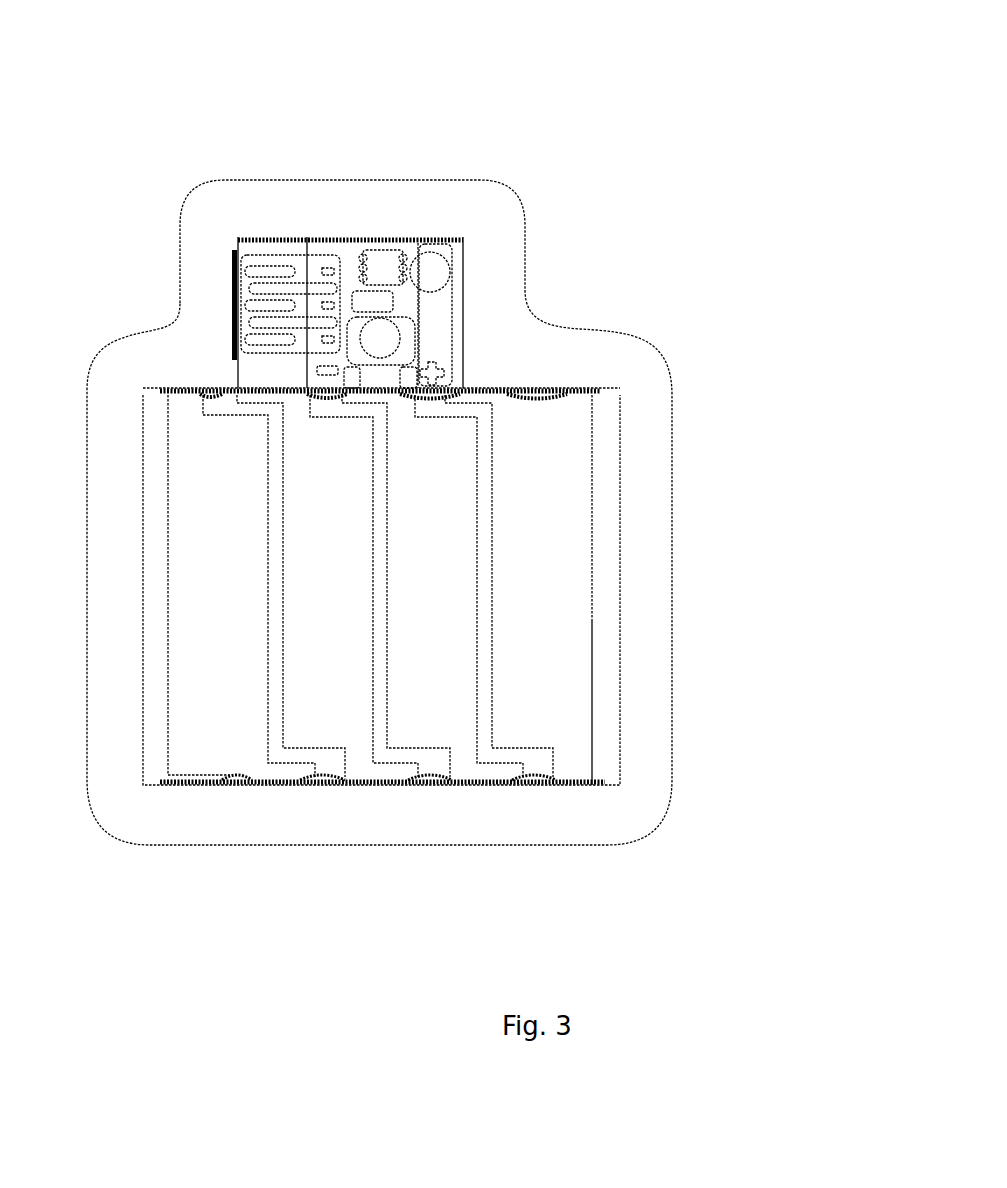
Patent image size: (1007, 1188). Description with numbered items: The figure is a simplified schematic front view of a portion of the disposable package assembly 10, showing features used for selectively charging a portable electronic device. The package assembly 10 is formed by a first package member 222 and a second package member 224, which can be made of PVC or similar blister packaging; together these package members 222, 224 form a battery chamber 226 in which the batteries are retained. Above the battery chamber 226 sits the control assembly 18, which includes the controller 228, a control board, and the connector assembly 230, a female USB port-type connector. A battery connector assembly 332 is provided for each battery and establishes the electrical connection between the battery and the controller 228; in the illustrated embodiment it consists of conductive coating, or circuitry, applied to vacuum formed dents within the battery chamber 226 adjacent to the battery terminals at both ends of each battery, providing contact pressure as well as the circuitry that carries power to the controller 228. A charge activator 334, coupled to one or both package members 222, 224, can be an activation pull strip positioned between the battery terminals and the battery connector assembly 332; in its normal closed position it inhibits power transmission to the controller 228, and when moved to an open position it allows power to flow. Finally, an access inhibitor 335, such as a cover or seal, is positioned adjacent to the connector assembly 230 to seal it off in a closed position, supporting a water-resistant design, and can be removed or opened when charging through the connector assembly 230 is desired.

The disposable package assembly 10 is at (168, 137).
The control assembly 18 is at (288, 242).
The first package member 222 is at (642, 378).
The second package member 224 is at (153, 348).
The battery chamber 226 is at (328, 712).
The controller 228 is at (415, 333).
The connector assembly 230 is at (295, 305).
The battery connector assembly 332 is at (538, 390).
The charge activator 334 is at (558, 392).
The access inhibitor 335 is at (233, 297).